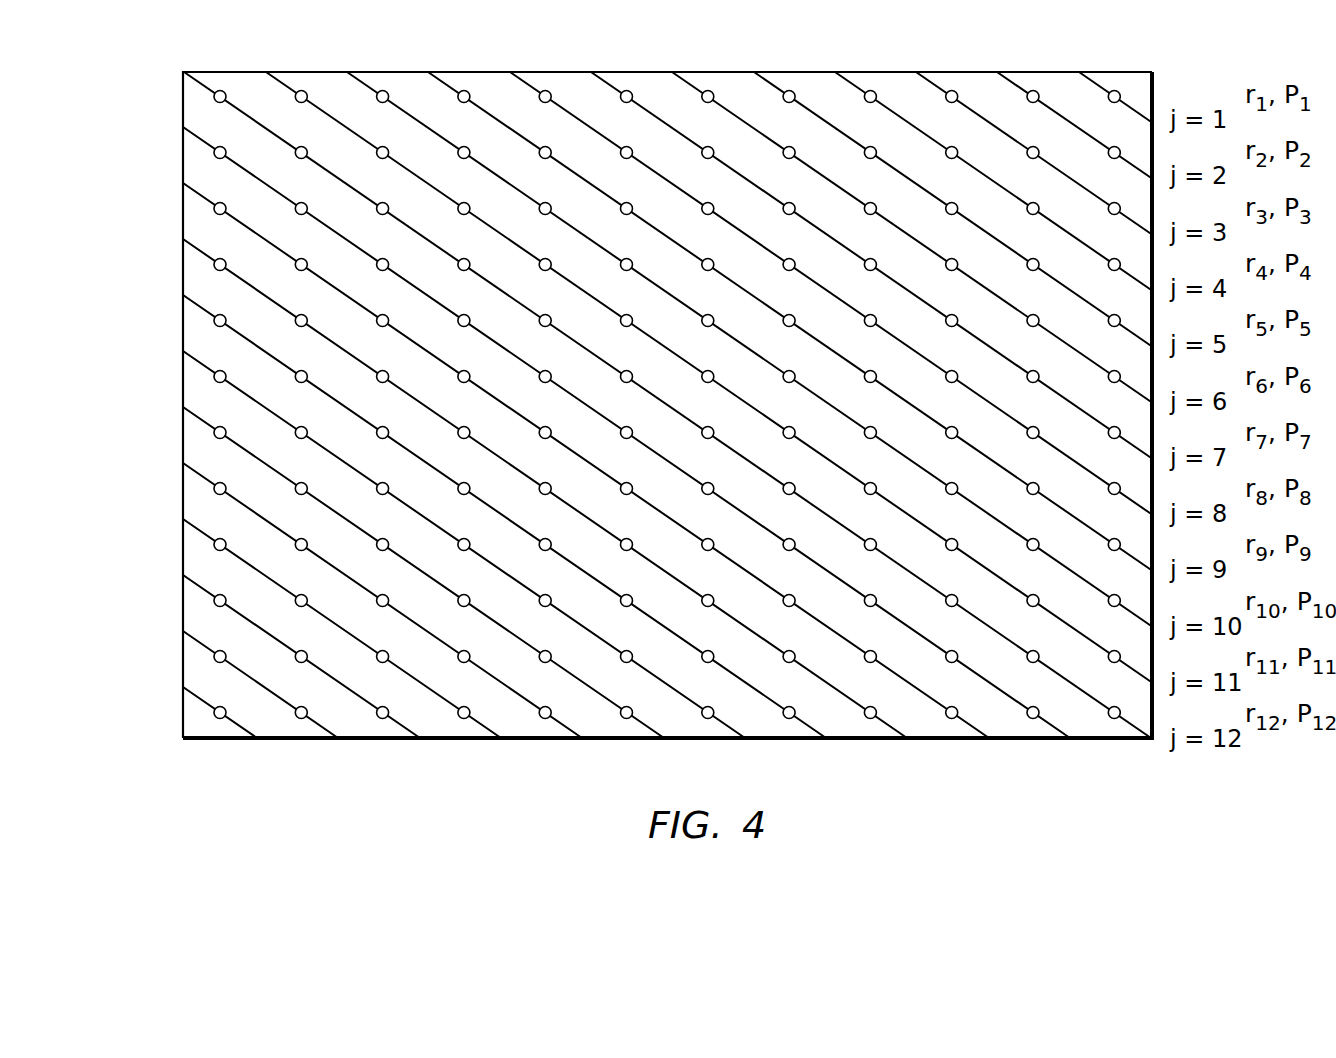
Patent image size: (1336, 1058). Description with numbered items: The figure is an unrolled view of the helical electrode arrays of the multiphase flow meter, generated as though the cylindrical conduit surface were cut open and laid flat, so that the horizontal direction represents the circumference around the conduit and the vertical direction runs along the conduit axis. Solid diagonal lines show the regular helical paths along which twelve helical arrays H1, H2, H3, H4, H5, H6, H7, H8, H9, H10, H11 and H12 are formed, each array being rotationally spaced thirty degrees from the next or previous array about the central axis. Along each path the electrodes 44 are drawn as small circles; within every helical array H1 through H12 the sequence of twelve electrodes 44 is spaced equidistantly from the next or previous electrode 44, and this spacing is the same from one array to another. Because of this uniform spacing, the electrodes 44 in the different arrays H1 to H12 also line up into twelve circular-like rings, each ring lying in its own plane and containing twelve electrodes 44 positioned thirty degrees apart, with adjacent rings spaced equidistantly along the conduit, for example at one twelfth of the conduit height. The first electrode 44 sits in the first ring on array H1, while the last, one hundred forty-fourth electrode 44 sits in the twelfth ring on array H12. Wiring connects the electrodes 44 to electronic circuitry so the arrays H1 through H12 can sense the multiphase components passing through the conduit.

The electrode 44 is at (1115, 82).
The helical array H1 is at (1097, 84).
The helical array H2 is at (1016, 84).
The helical array H3 is at (935, 84).
The helical array H4 is at (853, 84).
The helical array H5 is at (772, 84).
The helical array H6 is at (691, 84).
The helical array H7 is at (610, 84).
The helical array H8 is at (528, 84).
The helical array H9 is at (447, 84).
The helical array H10 is at (366, 84).
The helical array H11 is at (284, 84).
The helical array H12 is at (203, 84).